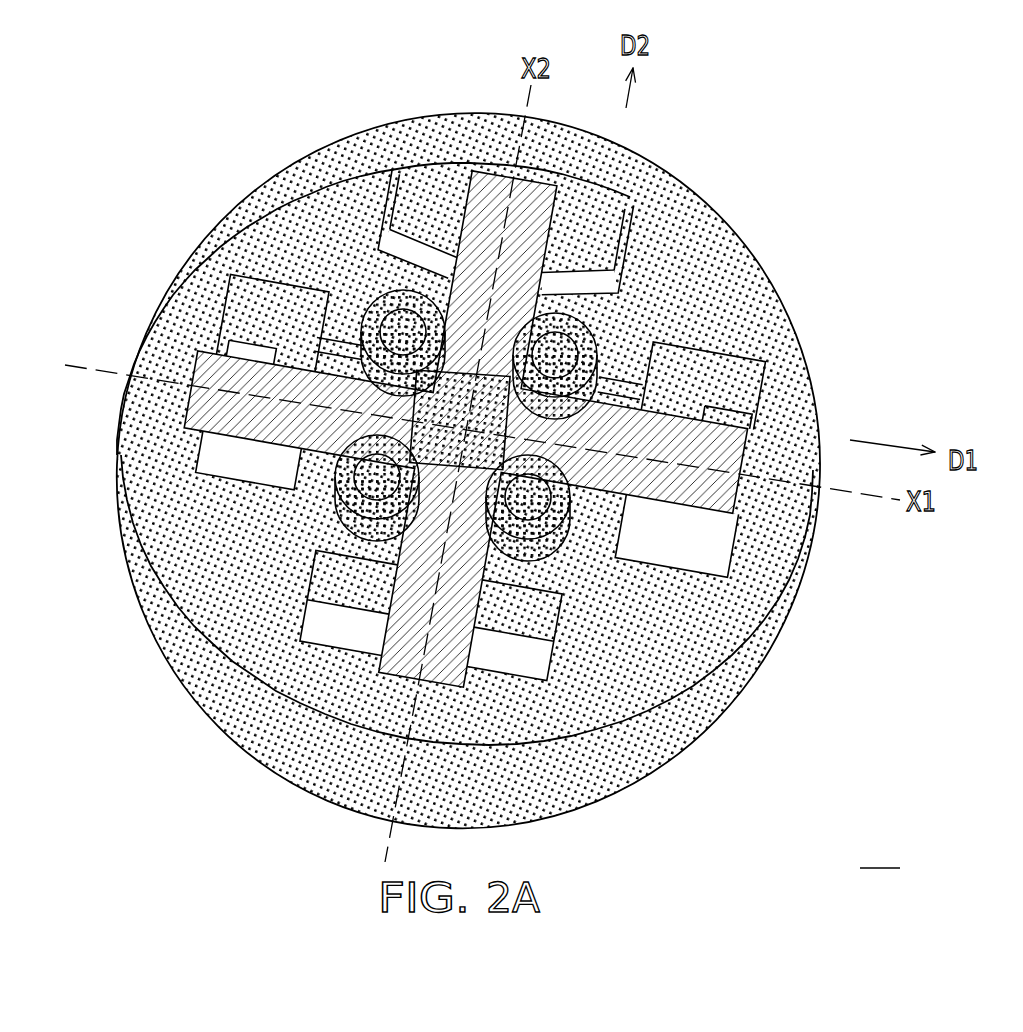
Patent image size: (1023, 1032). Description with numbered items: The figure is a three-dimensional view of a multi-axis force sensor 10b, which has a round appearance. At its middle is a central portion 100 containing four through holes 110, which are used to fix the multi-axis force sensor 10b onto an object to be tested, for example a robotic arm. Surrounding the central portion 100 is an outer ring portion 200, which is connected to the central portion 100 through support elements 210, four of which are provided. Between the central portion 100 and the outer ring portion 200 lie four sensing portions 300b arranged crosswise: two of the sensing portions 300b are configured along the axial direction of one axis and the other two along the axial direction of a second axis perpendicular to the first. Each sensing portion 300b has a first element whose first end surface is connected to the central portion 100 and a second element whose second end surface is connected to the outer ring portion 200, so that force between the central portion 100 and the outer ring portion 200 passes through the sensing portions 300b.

The multi-axis force sensor 10b is at (468, 470).
The central portion 100 is at (457, 390).
The through holes 110 is at (423, 327).
The outer ring portion 200 is at (738, 668).
The support element 210 is at (617, 327).
The sensing portions 300b is at (527, 228).